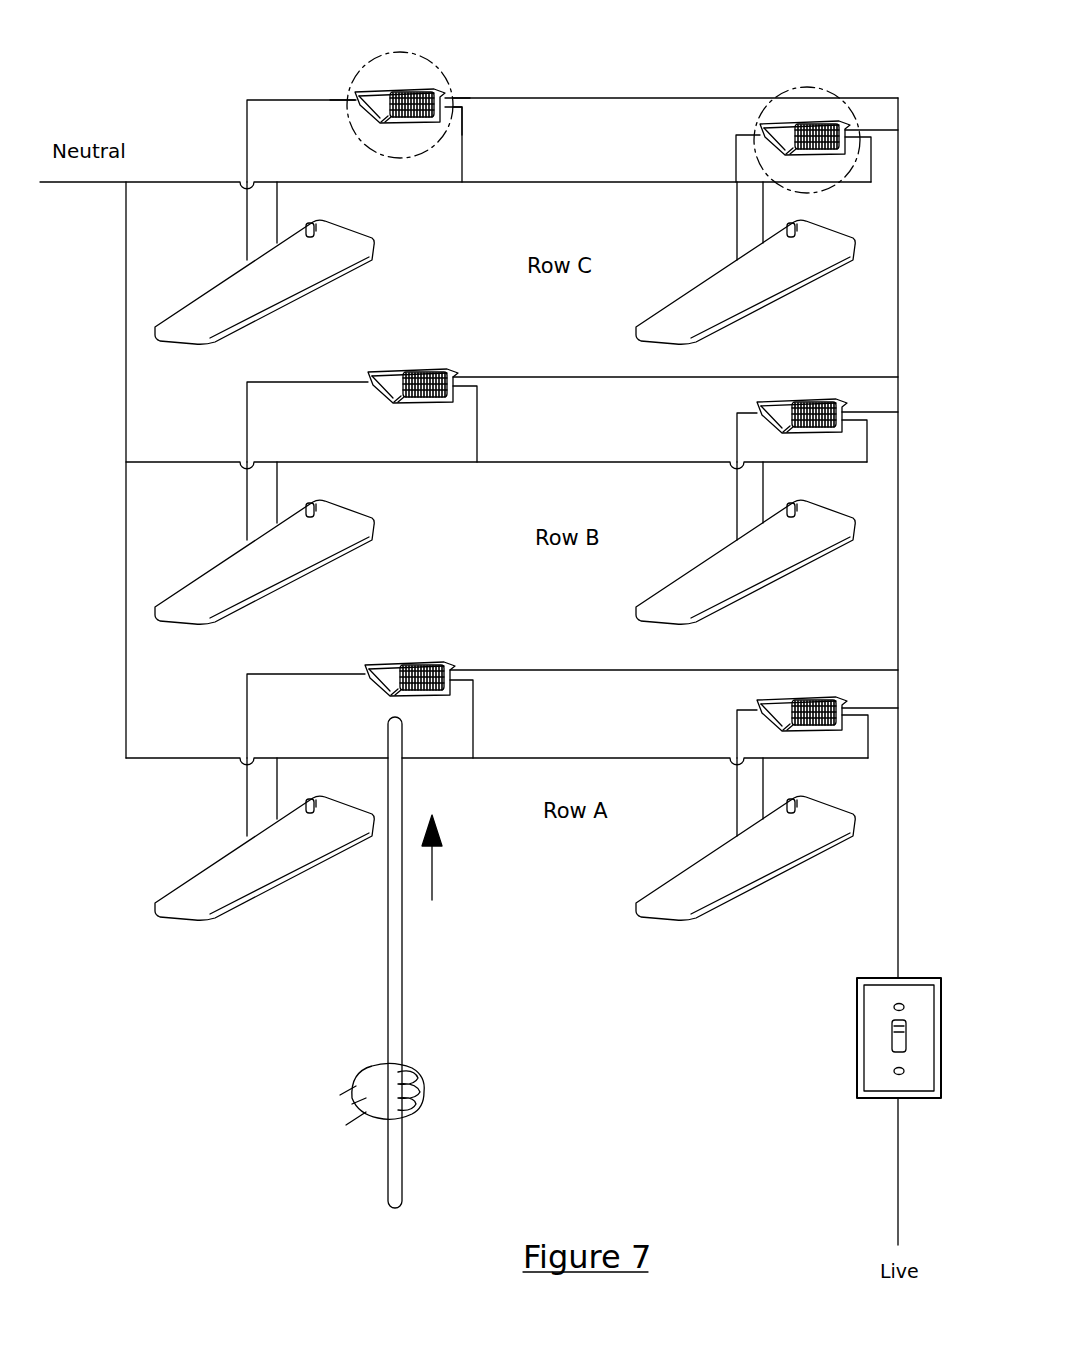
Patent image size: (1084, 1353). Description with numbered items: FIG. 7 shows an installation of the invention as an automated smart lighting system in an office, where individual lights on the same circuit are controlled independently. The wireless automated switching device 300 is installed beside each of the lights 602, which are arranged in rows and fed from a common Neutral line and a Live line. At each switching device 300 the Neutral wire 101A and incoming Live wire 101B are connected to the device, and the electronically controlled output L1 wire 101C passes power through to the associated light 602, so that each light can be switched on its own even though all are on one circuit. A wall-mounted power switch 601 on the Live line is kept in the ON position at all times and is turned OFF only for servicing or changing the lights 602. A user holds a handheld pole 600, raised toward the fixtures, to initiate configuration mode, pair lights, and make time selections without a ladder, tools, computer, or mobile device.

The wireless automated switching device 300 is at (368, 55).
The Neutral wire 101A is at (467, 125).
The Live wire 101B is at (467, 92).
The L1 output wire 101C is at (343, 120).
The handheld pole 600 is at (380, 898).
The power switch 601 is at (917, 970).
The lights 602 is at (345, 280).